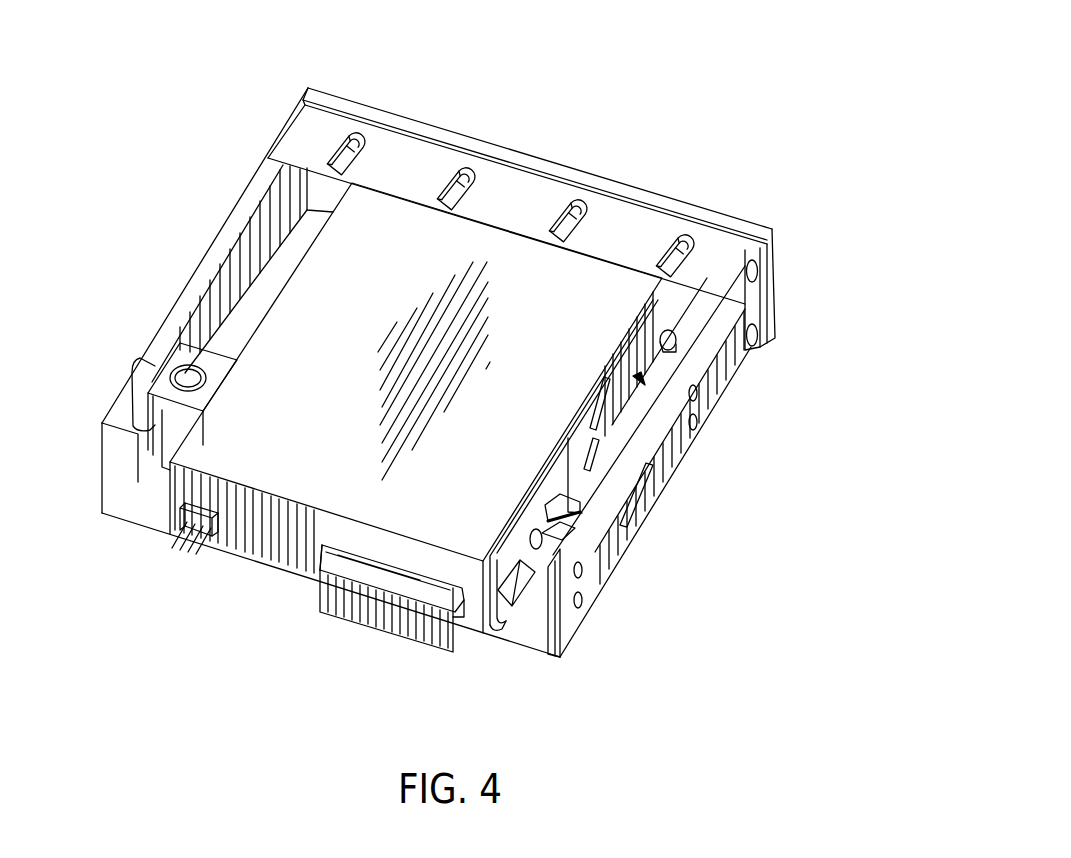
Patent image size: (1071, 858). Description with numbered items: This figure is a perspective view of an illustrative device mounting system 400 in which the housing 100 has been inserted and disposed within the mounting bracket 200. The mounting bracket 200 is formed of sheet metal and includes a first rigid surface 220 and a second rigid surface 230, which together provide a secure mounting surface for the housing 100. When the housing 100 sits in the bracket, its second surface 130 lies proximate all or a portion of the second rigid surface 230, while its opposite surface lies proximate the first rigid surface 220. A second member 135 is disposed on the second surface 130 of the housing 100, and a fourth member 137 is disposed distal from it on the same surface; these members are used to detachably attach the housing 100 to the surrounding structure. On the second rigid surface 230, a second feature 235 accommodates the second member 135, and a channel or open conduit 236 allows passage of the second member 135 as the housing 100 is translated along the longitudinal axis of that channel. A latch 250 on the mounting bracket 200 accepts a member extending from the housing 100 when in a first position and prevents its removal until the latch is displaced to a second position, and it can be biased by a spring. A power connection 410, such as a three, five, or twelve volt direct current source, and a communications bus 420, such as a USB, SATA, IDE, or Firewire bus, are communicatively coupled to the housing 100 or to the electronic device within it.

The housing 100 is at (382, 275).
The second surface 130 is at (640, 380).
The second member 135 is at (543, 533).
The fourth member 137 is at (674, 340).
The mounting bracket 200 is at (776, 232).
The first rigid surface 220 is at (240, 268).
The second rigid surface 230 is at (673, 462).
The second feature 235 is at (541, 480).
The channel or open conduit 236 is at (494, 600).
The latch 250 is at (152, 382).
The device mounting system 400 is at (645, 113).
The power connection 410 is at (183, 511).
The communications bus 420 is at (318, 562).